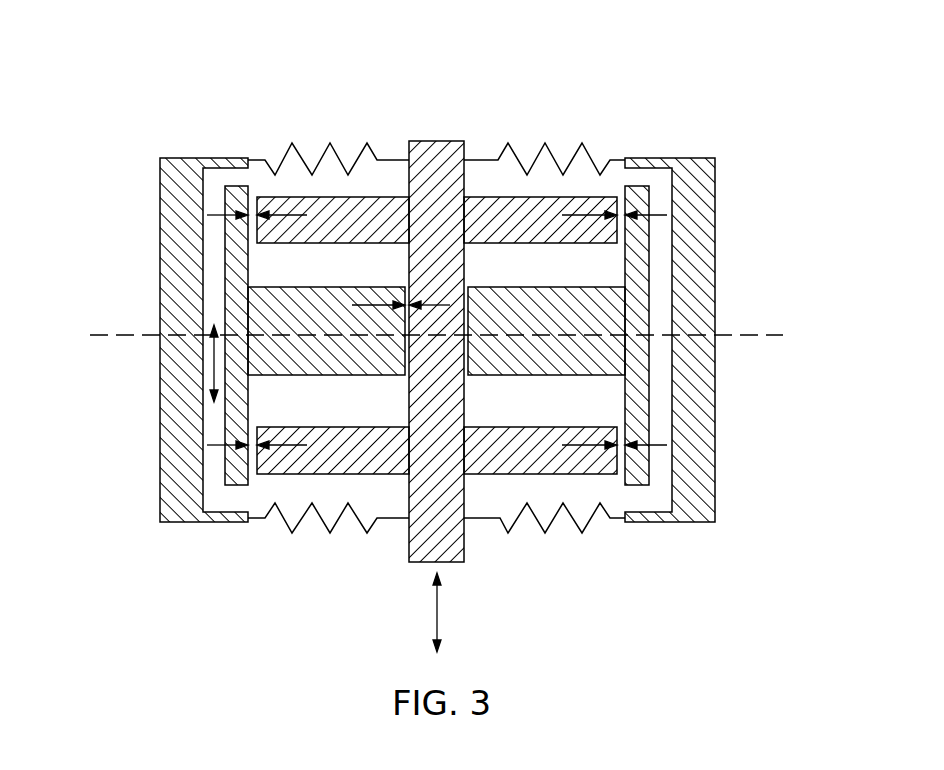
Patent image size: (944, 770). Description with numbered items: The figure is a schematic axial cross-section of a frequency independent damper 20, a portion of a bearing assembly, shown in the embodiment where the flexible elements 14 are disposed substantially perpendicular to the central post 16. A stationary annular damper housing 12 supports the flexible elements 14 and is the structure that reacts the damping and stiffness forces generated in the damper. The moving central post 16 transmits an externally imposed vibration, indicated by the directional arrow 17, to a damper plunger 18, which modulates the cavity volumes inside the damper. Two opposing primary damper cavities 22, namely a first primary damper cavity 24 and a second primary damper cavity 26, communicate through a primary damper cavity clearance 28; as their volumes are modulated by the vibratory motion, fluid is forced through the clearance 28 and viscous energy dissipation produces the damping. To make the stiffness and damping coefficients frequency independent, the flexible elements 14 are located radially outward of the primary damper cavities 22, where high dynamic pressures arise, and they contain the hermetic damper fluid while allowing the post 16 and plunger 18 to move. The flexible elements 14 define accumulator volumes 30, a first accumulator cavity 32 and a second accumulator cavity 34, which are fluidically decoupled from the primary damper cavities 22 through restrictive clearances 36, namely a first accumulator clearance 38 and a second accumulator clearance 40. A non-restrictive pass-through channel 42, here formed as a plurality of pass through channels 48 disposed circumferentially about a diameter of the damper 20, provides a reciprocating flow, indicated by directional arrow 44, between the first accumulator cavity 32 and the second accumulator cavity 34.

The stationary annular damper housing 12 is at (166, 162).
The flexible elements 14 is at (591, 160).
The central post 16 is at (403, 311).
The directional arrow 17 is at (438, 608).
The damper plunger 18 is at (421, 146).
The frequency independent damper 20 is at (772, 50).
The primary damper cavities 22 is at (519, 335).
The first primary damper cavity 24 is at (613, 262).
The second primary damper cavity 26 is at (613, 403).
The primary damper cavity clearance 28 is at (350, 300).
The accumulator volumes 30 is at (394, 334).
The first accumulator cavity 32 is at (290, 162).
The second accumulator cavity 34 is at (291, 517).
The restrictive clearances 36 is at (363, 321).
The first accumulator clearance 38 is at (213, 215).
The second accumulator clearance 40 is at (206, 443).
The non-restrictive pass-through channel 42 is at (728, 335).
The directional arrow 44 is at (212, 361).
The pass through channels 48 is at (660, 286).